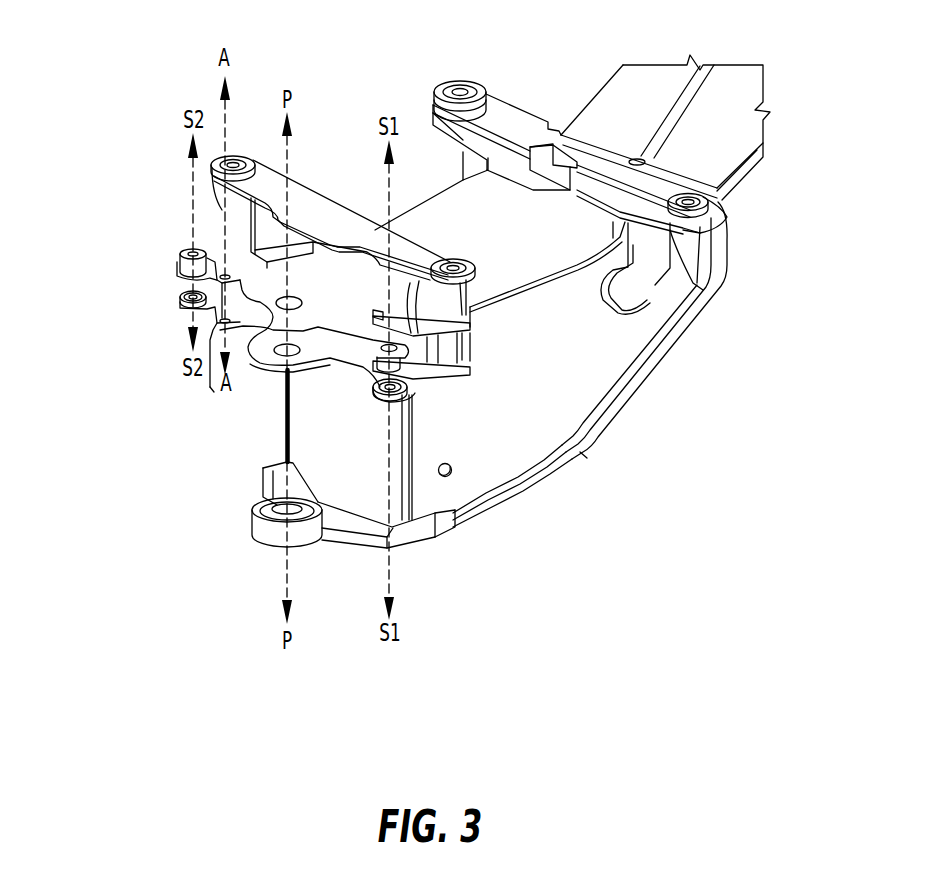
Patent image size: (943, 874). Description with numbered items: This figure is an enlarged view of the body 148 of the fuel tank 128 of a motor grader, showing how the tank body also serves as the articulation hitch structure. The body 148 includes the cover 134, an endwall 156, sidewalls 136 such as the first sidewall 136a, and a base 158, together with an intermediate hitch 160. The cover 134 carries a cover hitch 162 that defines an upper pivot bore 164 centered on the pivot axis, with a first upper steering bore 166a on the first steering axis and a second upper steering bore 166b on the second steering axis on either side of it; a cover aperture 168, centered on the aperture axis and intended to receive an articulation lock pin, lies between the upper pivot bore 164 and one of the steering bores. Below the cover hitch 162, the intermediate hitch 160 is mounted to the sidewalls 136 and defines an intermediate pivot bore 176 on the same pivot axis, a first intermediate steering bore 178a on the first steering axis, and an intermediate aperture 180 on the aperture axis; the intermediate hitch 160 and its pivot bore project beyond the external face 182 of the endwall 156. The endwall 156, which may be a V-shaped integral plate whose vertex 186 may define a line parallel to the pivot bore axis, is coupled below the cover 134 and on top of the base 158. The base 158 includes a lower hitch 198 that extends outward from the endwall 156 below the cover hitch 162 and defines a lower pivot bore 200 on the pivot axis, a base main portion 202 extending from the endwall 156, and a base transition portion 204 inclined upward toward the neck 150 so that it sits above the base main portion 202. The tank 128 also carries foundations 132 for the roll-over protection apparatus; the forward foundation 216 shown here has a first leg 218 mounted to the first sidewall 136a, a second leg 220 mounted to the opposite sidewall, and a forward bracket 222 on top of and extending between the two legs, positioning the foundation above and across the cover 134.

The fuel tank 128 is at (170, 328).
The foundation 132 is at (474, 124).
The cover 134 is at (449, 208).
The back plate 136 is at (558, 437).
The first sidewall 136a is at (576, 420).
The body 148 is at (592, 366).
The neck 150 is at (738, 91).
The endwall 156 is at (305, 429).
The base 158 is at (484, 520).
The intermediate hitch 160 is at (258, 377).
The cover hitch 162 is at (246, 278).
The upper pivot bore 164 is at (297, 298).
The first upper steering bore 166a is at (378, 305).
The second upper steering bore 166b is at (192, 255).
The cover aperture 168 is at (242, 262).
The intermediate pivot bore 176 is at (281, 355).
The first intermediate steering bore 178a is at (182, 290).
The intermediate aperture 180 is at (222, 318).
The external face 182 is at (305, 461).
The vertex 186 is at (323, 367).
The lower hitch 198 is at (243, 545).
The lower pivot bore 200 is at (267, 150).
The base main portion 202 is at (541, 505).
The base transition portion 204 is at (681, 341).
The forward foundation 216 is at (506, 95).
The first leg 218 is at (647, 261).
The second leg 220 is at (473, 163).
The forward bracket 222 is at (594, 158).